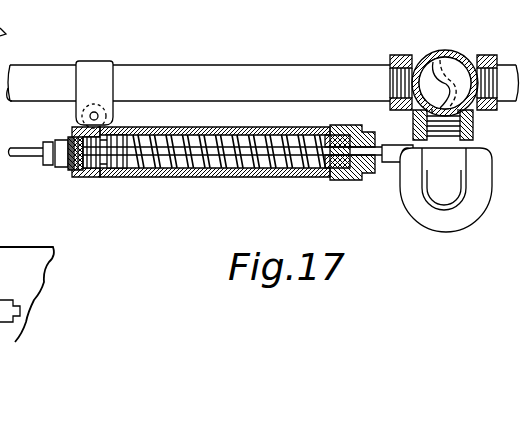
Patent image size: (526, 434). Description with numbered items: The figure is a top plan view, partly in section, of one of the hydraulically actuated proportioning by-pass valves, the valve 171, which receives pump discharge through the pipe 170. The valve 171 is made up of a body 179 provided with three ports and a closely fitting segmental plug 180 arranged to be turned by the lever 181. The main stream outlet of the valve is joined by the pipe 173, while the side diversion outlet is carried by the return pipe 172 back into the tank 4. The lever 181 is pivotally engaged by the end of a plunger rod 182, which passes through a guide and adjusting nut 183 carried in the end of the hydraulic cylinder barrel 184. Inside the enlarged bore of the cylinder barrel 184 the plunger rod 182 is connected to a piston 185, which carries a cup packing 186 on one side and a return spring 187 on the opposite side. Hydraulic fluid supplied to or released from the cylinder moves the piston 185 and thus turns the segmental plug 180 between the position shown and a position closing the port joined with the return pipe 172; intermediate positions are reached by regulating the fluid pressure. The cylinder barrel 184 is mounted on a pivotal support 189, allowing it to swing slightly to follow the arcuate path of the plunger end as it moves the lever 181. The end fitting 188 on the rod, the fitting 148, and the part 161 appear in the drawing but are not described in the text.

The tank 4 is at (17, 245).
The adjacent part 161 is at (6, 230).
The fitting 148 is at (0, 291).
The pipe 173 is at (210, 65).
The pivotal support 189 is at (75, 110).
The rod end 188 is at (20, 150).
The cup packing 186 is at (91, 177).
The piston 185 is at (120, 177).
The return spring 187 is at (217, 178).
The hydraulic cylinder barrel 184 is at (280, 178).
The guide and adjusting nut 183 is at (362, 182).
The plunger rod 182 is at (387, 166).
The lever 181 is at (402, 142).
The proportioning by-pass valve 171 is at (454, 76).
The pipe 170 is at (505, 112).
The segmental plug 180 is at (427, 52).
The body 179 is at (450, 46).
The return pipe 172 is at (457, 170).